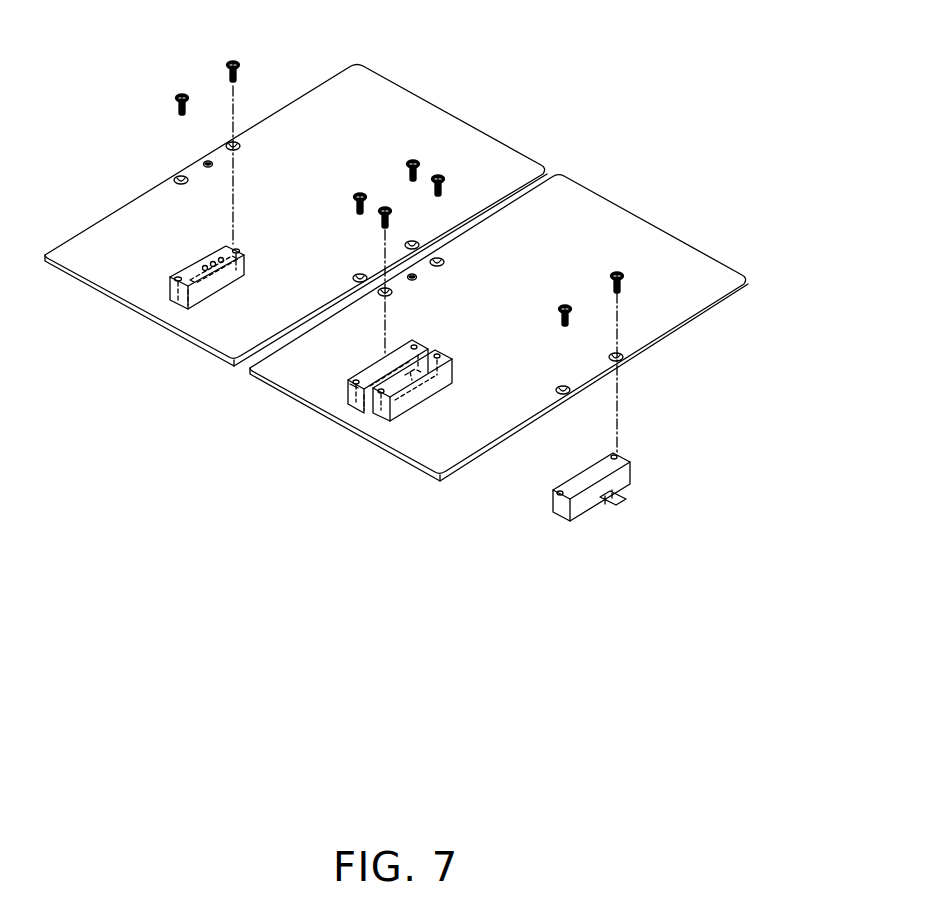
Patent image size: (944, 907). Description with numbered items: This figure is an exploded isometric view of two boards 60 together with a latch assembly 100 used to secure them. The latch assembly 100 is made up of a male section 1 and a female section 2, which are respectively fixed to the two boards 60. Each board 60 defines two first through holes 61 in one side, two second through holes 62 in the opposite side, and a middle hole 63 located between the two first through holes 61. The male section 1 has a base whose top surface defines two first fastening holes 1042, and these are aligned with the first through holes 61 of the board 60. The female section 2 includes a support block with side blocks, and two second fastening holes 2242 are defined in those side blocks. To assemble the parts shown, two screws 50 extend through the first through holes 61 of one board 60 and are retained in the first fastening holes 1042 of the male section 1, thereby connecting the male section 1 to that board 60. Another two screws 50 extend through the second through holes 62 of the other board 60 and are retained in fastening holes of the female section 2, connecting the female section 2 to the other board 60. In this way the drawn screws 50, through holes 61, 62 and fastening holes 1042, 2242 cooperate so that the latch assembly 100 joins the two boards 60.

The screw 50 is at (240, 60).
The board 60 is at (384, 104).
The first through hole 61 is at (229, 143).
The second through hole 62 is at (417, 243).
The middle hole 63 is at (203, 160).
The first fastening hole 1042 is at (170, 278).
The female section 2 is at (177, 303).
The second fastening hole 2242 is at (348, 377).
The male section 1 is at (353, 401).
The latch assembly 100 is at (375, 514).